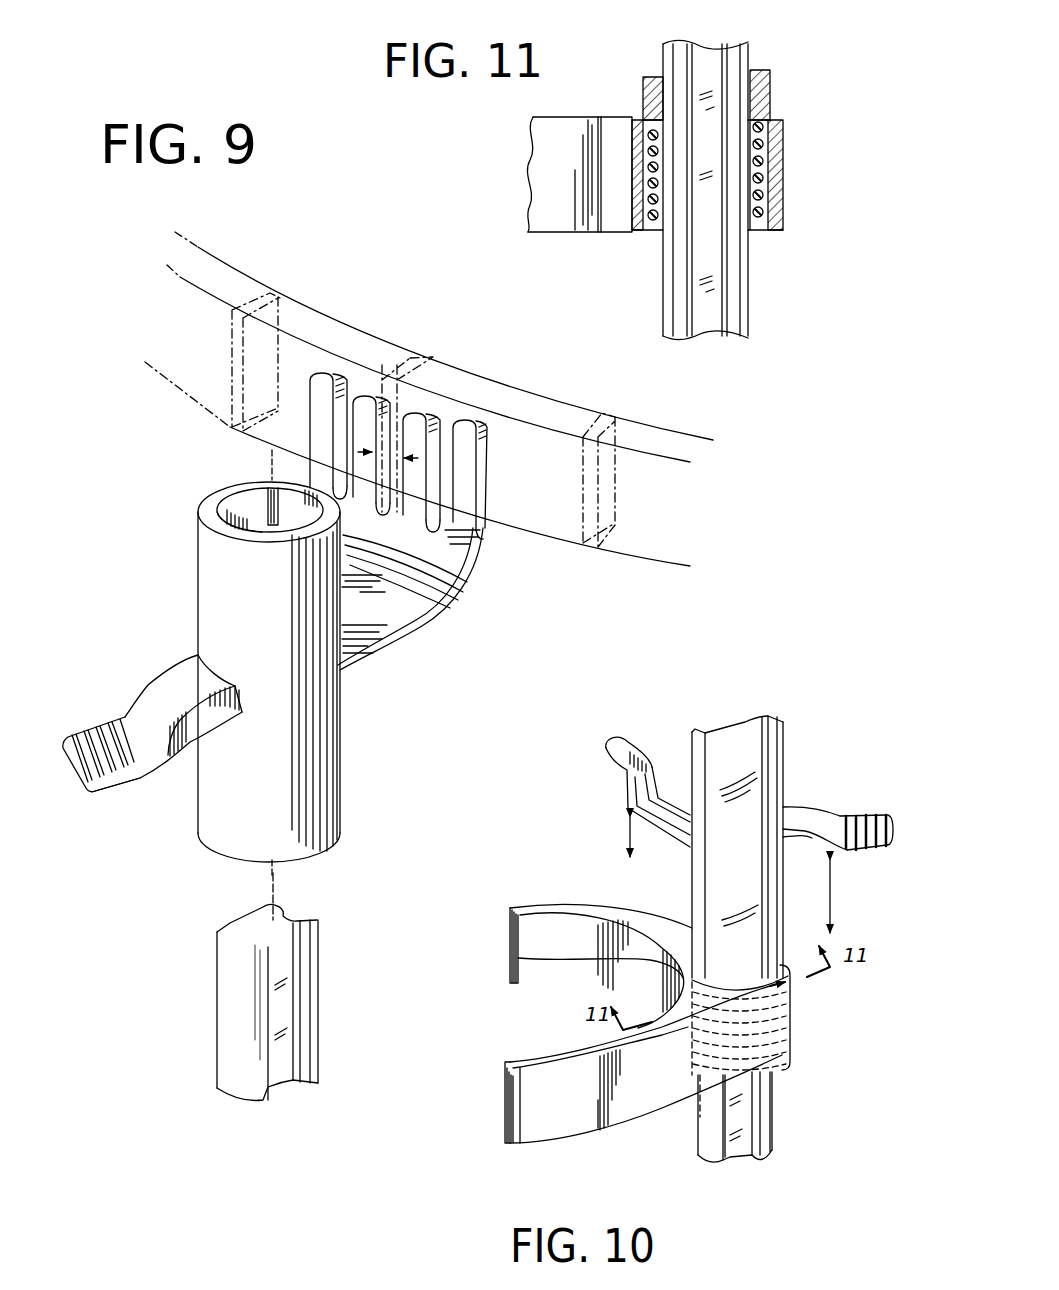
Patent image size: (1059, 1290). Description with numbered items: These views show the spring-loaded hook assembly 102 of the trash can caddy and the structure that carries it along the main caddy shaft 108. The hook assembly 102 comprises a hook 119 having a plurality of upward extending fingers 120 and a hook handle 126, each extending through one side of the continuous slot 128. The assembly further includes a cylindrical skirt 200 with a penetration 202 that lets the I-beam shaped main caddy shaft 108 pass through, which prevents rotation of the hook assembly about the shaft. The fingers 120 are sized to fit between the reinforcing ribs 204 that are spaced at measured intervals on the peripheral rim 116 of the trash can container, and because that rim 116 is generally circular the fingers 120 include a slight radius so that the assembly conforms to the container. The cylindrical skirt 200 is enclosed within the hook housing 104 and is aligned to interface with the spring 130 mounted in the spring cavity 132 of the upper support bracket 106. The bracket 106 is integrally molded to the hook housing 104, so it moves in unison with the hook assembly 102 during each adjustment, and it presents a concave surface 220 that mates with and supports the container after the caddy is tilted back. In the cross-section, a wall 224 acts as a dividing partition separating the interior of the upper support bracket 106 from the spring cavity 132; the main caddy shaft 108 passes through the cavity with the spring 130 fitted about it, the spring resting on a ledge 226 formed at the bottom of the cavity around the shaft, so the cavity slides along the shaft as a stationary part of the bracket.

In FIG. 9, the spring-loaded hook assembly 102 is at (172, 803).
In FIG. 10, the hook housing 104 is at (748, 740).
In FIG. 11, the upper support bracket 106 is at (552, 162).
In FIG. 10, the upper support bracket 106 is at (550, 905).
In FIG. 11, the main caddy shaft 108 is at (742, 302).
In FIG. 9, the main caddy shaft 108 is at (227, 1013).
In FIG. 10, the main caddy shaft 108 is at (758, 1130).
In FIG. 9, the peripheral rim 116 is at (200, 277).
In FIG. 9, the hook 119 is at (413, 604).
In FIG. 10, the hook 119 is at (668, 845).
In FIG. 9, the fingers 120 is at (373, 378).
In FIG. 10, the fingers 120 is at (607, 741).
In FIG. 9, the hook handle 126 is at (150, 703).
In FIG. 10, the hook handle 126 is at (860, 817).
In FIG. 10, the continuous slot 128 is at (787, 760).
In FIG. 11, the spring 130 is at (648, 182).
In FIG. 10, the spring 130 is at (792, 1000).
In FIG. 11, the spring cavity 132 is at (765, 177).
In FIG. 10, the spring cavity 132 is at (793, 1045).
In FIG. 11, the cylindrical skirt 200 is at (643, 88).
In FIG. 9, the cylindrical skirt 200 is at (198, 614).
In FIG. 10, the cylindrical skirt 200 is at (717, 777).
In FIG. 9, the penetration 202 is at (256, 516).
In FIG. 9, the reinforcing ribs 204 is at (292, 298).
In FIG. 11, the concave surface 220 is at (547, 213).
In FIG. 10, the concave surface 220 is at (532, 980).
In FIG. 11, the wall 224 is at (633, 117).
In FIG. 10, the wall 224 is at (535, 977).
In FIG. 11, the ledge 226 is at (660, 222).